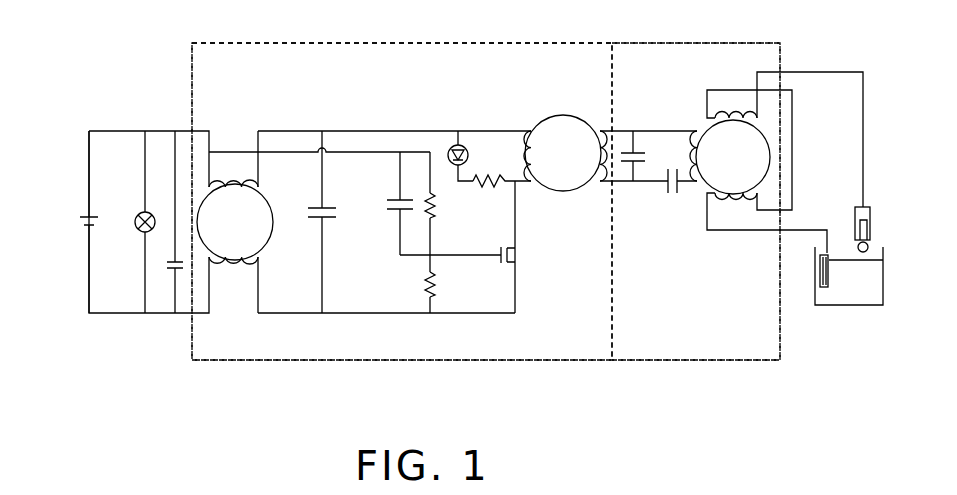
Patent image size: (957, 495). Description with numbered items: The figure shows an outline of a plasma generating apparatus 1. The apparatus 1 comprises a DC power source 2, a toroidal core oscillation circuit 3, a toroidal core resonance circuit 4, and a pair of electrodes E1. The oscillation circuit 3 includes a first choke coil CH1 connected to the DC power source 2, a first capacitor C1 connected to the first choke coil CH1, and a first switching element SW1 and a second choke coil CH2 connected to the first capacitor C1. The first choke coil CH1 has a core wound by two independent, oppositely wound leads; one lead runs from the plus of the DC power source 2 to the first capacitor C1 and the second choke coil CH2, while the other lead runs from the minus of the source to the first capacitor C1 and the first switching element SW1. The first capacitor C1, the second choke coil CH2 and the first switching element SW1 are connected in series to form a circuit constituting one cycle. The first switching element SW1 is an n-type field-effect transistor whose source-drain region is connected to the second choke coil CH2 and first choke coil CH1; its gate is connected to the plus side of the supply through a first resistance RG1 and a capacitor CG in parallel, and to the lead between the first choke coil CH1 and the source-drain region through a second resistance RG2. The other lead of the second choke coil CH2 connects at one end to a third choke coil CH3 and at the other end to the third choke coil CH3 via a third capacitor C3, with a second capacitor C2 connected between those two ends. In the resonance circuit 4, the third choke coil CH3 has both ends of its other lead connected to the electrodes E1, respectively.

The plasma generating apparatus 1 is at (508, 362).
The DC power source 2 is at (84, 222).
The toroidal core oscillation circuit 3 is at (378, 361).
The toroidal core resonance circuit 4 is at (695, 361).
The first choke coil CH1 is at (240, 238).
The second choke coil CH2 is at (567, 182).
The third choke coil CH3 is at (749, 160).
The first capacitor C1 is at (318, 219).
The second capacitor C2 is at (641, 155).
The third capacitor C3 is at (673, 196).
The capacitor CG is at (395, 211).
The first resistance RG1 is at (441, 217).
The second resistance RG2 is at (441, 297).
The first switching element SW1 is at (516, 256).
The electrodes E1 is at (853, 208).